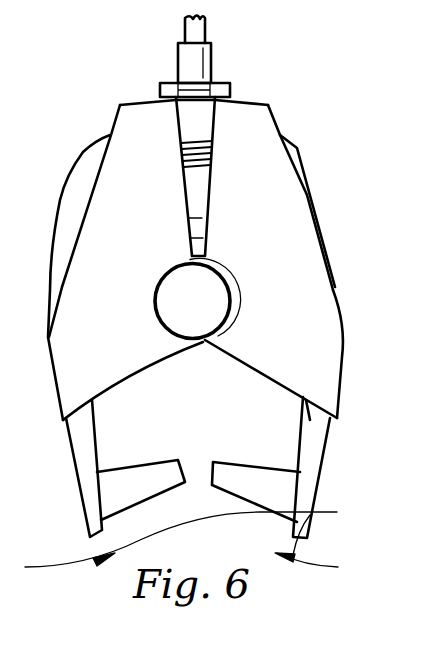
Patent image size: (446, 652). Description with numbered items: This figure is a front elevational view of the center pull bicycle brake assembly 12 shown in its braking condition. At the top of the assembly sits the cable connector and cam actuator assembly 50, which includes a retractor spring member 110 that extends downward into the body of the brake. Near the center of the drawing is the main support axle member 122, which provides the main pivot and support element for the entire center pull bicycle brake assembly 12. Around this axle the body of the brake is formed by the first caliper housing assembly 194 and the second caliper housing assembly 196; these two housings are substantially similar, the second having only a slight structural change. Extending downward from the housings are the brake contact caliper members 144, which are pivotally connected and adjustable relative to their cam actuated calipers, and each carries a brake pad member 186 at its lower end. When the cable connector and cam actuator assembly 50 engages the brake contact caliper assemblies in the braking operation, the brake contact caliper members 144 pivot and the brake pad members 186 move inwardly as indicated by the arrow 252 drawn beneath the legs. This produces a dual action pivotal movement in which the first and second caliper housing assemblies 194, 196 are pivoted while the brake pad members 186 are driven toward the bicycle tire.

The center pull bicycle brake assembly 12 is at (277, 108).
The cable connector and cam actuator assembly 50 is at (210, 80).
The retractor spring member 110 is at (183, 160).
The first caliper housing assembly 194 is at (153, 225).
The second caliper housing assembly 196 is at (252, 247).
The main support axle member 122 is at (205, 292).
The brake contact caliper member 144 is at (85, 447).
The brake pad member 186 is at (107, 483).
The arrow 252 is at (204, 536).